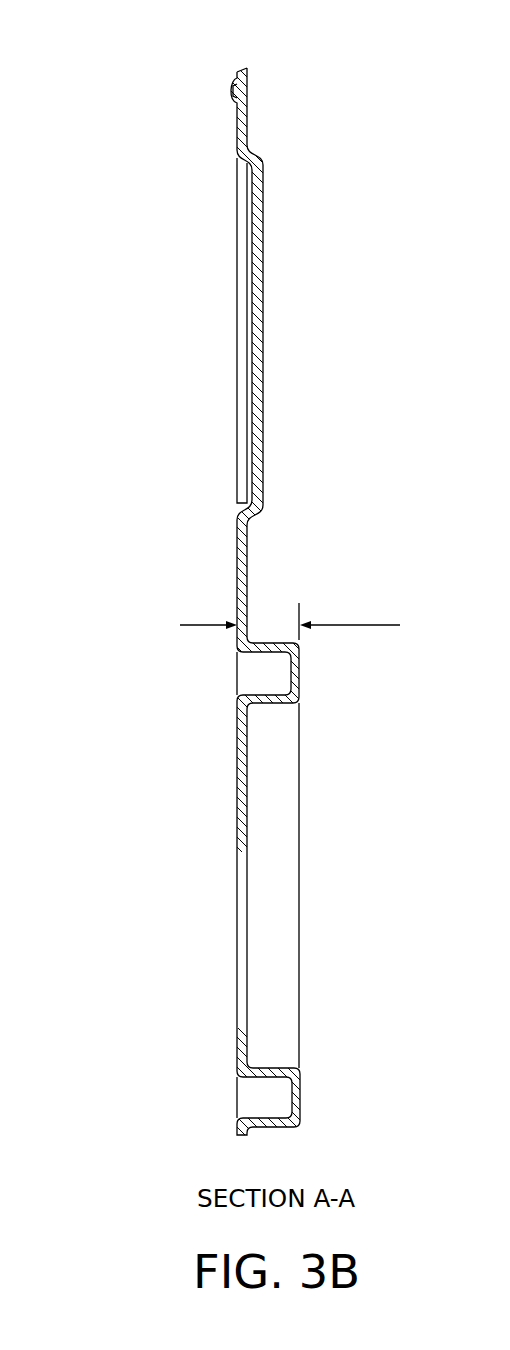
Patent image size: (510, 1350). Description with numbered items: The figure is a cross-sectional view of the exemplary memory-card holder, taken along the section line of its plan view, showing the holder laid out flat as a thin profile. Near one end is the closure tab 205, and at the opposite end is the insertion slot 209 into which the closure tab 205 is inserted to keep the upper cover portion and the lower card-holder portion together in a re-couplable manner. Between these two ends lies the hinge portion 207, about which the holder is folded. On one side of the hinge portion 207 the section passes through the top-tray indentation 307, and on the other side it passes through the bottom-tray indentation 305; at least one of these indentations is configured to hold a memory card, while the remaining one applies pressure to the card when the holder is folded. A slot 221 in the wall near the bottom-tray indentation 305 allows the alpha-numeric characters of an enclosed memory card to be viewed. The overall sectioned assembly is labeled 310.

The sectioned assembly 310 is at (112, 46).
The closure tab 205 is at (248, 78).
The top-tray indentation 307 is at (284, 265).
The hinge portion 207 is at (237, 591).
The bottom-tray indentation 305 is at (318, 864).
The slot 221 is at (238, 748).
The insertion slot 209 is at (300, 1090).